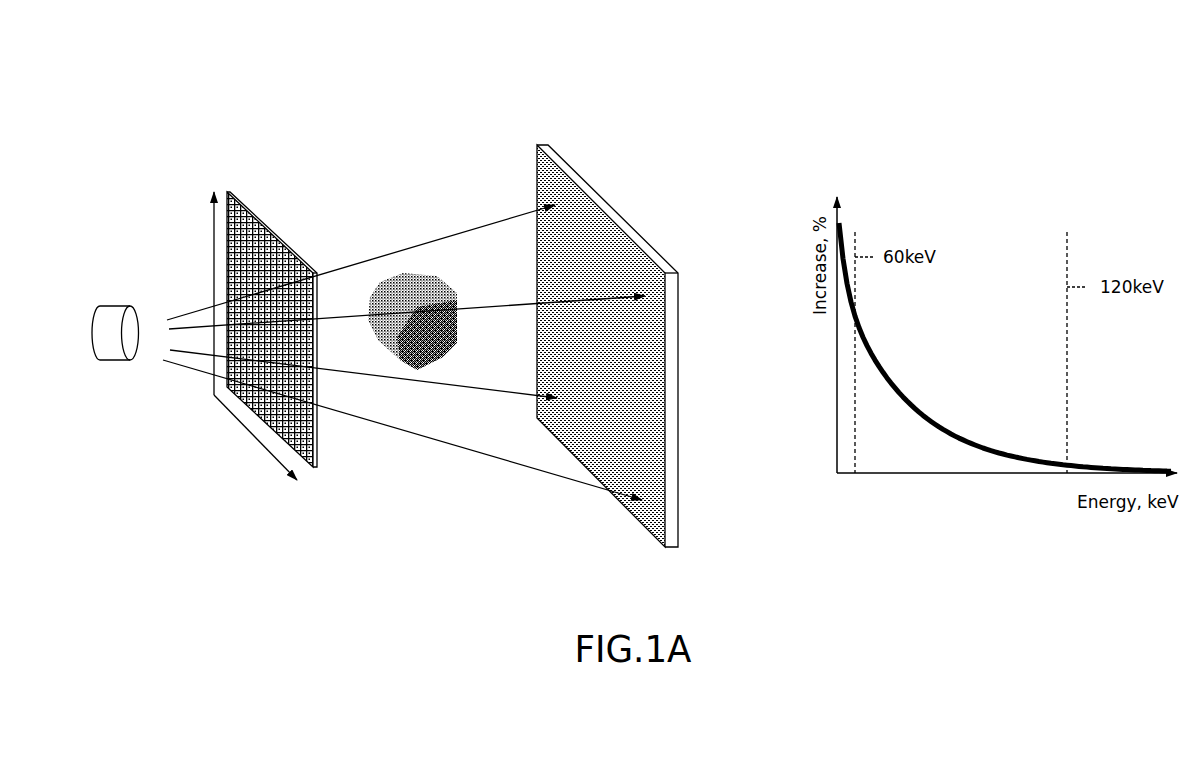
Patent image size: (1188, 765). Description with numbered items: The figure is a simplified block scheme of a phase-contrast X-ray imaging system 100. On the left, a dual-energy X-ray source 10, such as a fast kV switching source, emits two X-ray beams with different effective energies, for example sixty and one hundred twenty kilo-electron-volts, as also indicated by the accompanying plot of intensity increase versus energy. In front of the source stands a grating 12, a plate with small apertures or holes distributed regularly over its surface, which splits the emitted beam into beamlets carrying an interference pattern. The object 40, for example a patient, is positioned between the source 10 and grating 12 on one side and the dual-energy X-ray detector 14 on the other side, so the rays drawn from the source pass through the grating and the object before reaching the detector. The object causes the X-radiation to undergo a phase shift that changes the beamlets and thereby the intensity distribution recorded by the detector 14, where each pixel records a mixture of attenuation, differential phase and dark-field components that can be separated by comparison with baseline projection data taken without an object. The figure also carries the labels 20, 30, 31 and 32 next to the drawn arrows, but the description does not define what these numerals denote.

The imaging system 100 is at (358, 92).
The dual-energy X-ray source 10 is at (114, 360).
The grating 12 is at (250, 200).
The dual-energy X-ray detector 14 is at (605, 485).
The x-ray beam 20 is at (362, 455).
The coordinate axes 30 is at (205, 245).
The vertical axis 31 is at (215, 283).
The horizontal axis 32 is at (223, 407).
The object 40 is at (403, 262).